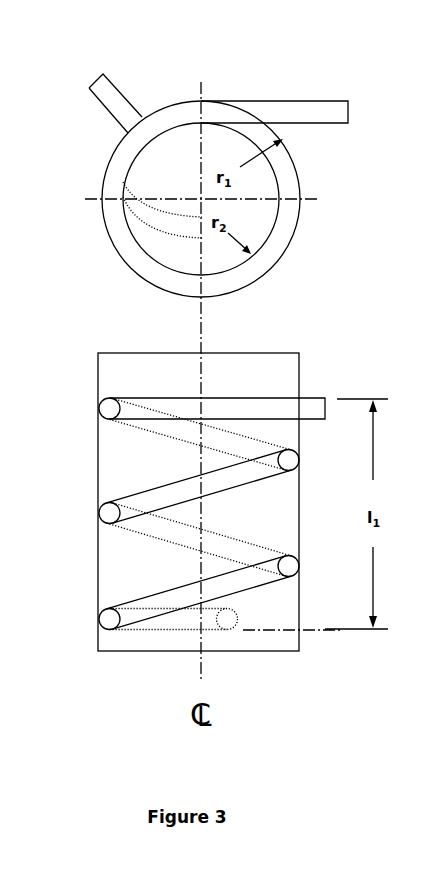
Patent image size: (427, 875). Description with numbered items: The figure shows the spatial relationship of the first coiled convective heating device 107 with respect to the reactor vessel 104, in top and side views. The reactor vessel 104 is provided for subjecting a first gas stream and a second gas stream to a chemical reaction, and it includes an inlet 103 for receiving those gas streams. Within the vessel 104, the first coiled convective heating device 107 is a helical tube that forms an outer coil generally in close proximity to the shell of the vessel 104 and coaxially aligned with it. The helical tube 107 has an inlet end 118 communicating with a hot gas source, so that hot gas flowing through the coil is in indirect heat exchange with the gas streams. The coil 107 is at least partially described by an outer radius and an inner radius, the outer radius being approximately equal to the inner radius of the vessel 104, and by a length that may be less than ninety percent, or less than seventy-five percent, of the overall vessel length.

The inlet 103 is at (99, 94).
The reactor vessel 104 is at (96, 563).
The first coiled convective heating device 107 is at (287, 703).
The inlet end 118 is at (313, 391).